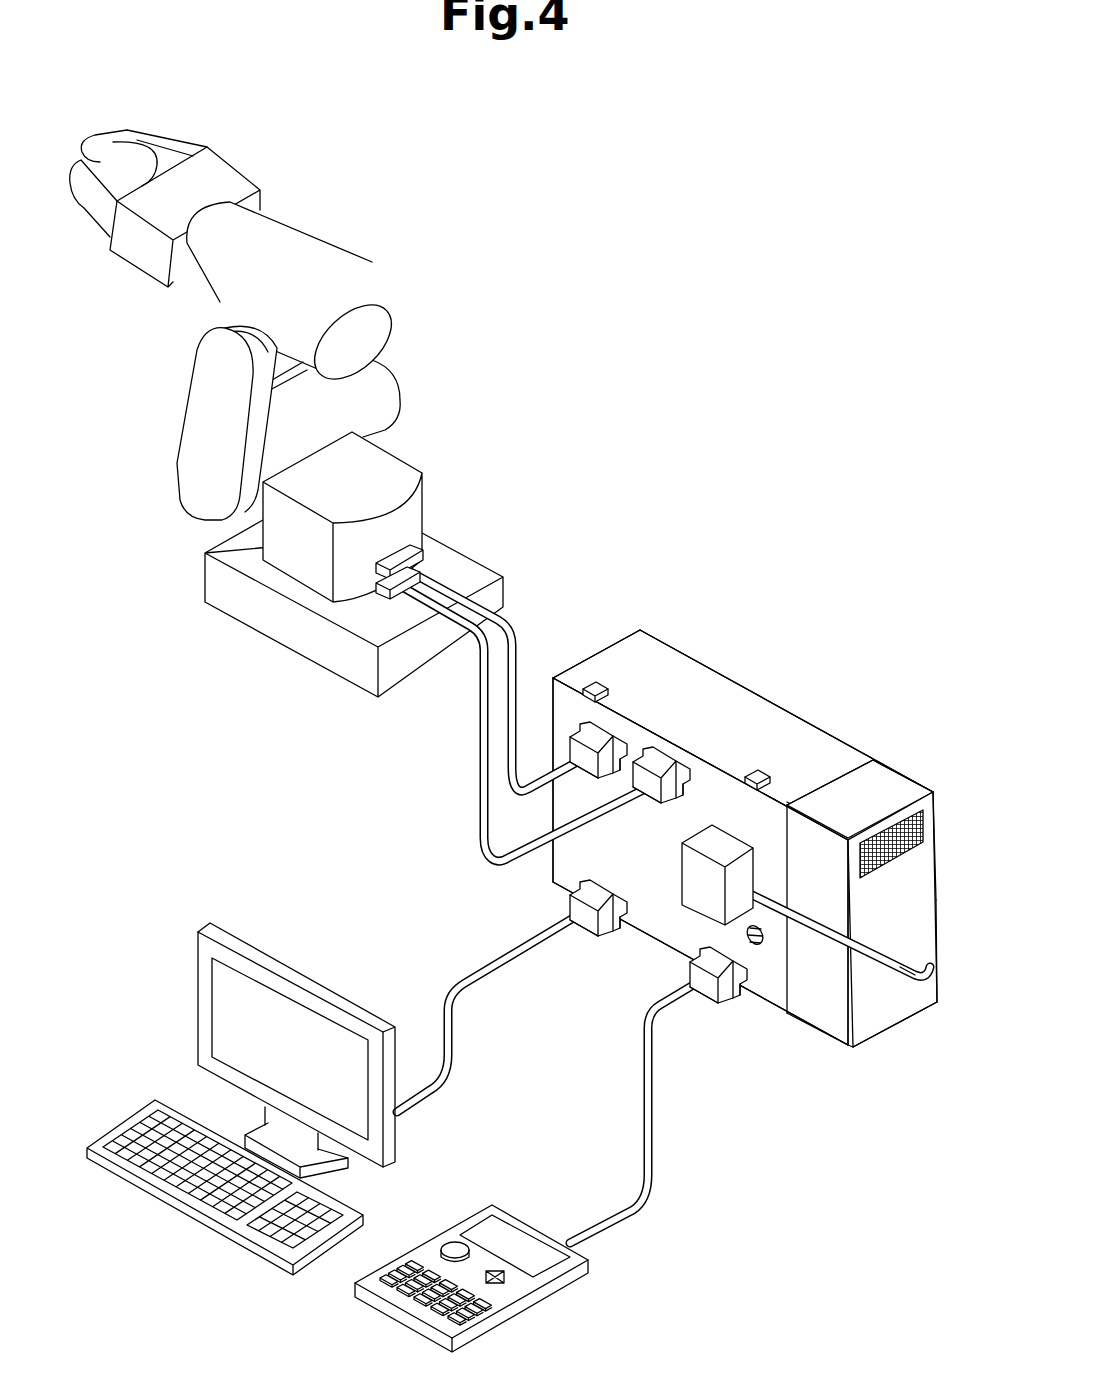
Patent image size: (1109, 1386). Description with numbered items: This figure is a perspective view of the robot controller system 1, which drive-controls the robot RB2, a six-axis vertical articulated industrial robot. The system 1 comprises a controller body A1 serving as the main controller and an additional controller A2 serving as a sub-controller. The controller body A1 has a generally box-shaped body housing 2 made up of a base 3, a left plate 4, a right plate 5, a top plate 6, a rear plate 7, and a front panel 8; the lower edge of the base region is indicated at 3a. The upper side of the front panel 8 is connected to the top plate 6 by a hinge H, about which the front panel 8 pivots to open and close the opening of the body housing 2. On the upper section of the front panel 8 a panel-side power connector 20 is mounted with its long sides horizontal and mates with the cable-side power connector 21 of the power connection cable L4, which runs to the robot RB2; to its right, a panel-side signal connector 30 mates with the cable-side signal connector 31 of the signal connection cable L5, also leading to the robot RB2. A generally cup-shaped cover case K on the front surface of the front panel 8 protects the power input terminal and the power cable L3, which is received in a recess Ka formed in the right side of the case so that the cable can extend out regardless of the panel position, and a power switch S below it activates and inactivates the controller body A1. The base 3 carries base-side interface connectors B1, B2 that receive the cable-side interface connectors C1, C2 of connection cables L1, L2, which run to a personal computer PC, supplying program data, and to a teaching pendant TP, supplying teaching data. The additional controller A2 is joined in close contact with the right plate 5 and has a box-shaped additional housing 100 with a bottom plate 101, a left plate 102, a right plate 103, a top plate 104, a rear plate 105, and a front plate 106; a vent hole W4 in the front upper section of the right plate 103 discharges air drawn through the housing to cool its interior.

The robot RB2 is at (328, 214).
The robot controller system 1 is at (833, 615).
The body housing 2 is at (754, 697).
The base 3 is at (555, 866).
The lower edge of front panel 3a is at (570, 890).
The left plate 4 is at (587, 668).
The right plate 5 is at (847, 777).
The top plate 6 is at (703, 668).
The rear plate 7 is at (835, 738).
The front panel 8 is at (560, 712).
The hinge H is at (603, 687).
The panel-side power connector 20 is at (607, 732).
The cable-side power connector 21 is at (593, 769).
The panel-side signal connector 30 is at (667, 762).
The cable-side signal connector 31 is at (644, 805).
The cover case K is at (720, 831).
The recess Ka is at (768, 880).
The power switch S is at (746, 934).
The base-side interface connector B1 is at (612, 894).
The base-side interface connector B2 is at (735, 956).
The cable-side interface connector C1 is at (611, 926).
The cable-side interface connector C2 is at (718, 1000).
The connection cable L1 is at (513, 963).
The connection cable L2 is at (656, 1108).
The power cable L3 is at (871, 962).
The power connection cable L4 is at (527, 788).
The signal connection cable L5 is at (480, 803).
The controller body A1 is at (816, 677).
The additional controller A2 is at (903, 696).
The additional housing 100 is at (877, 767).
The bottom plate 101 is at (890, 1025).
The left plate 102 is at (820, 792).
The right plate 103 is at (927, 902).
The top plate 104 is at (920, 790).
The rear plate 105 is at (937, 832).
The front plate 106 is at (807, 1015).
The vent hole W4 is at (893, 860).
The personal computer PC is at (324, 972).
The teaching pendant TP is at (506, 1197).